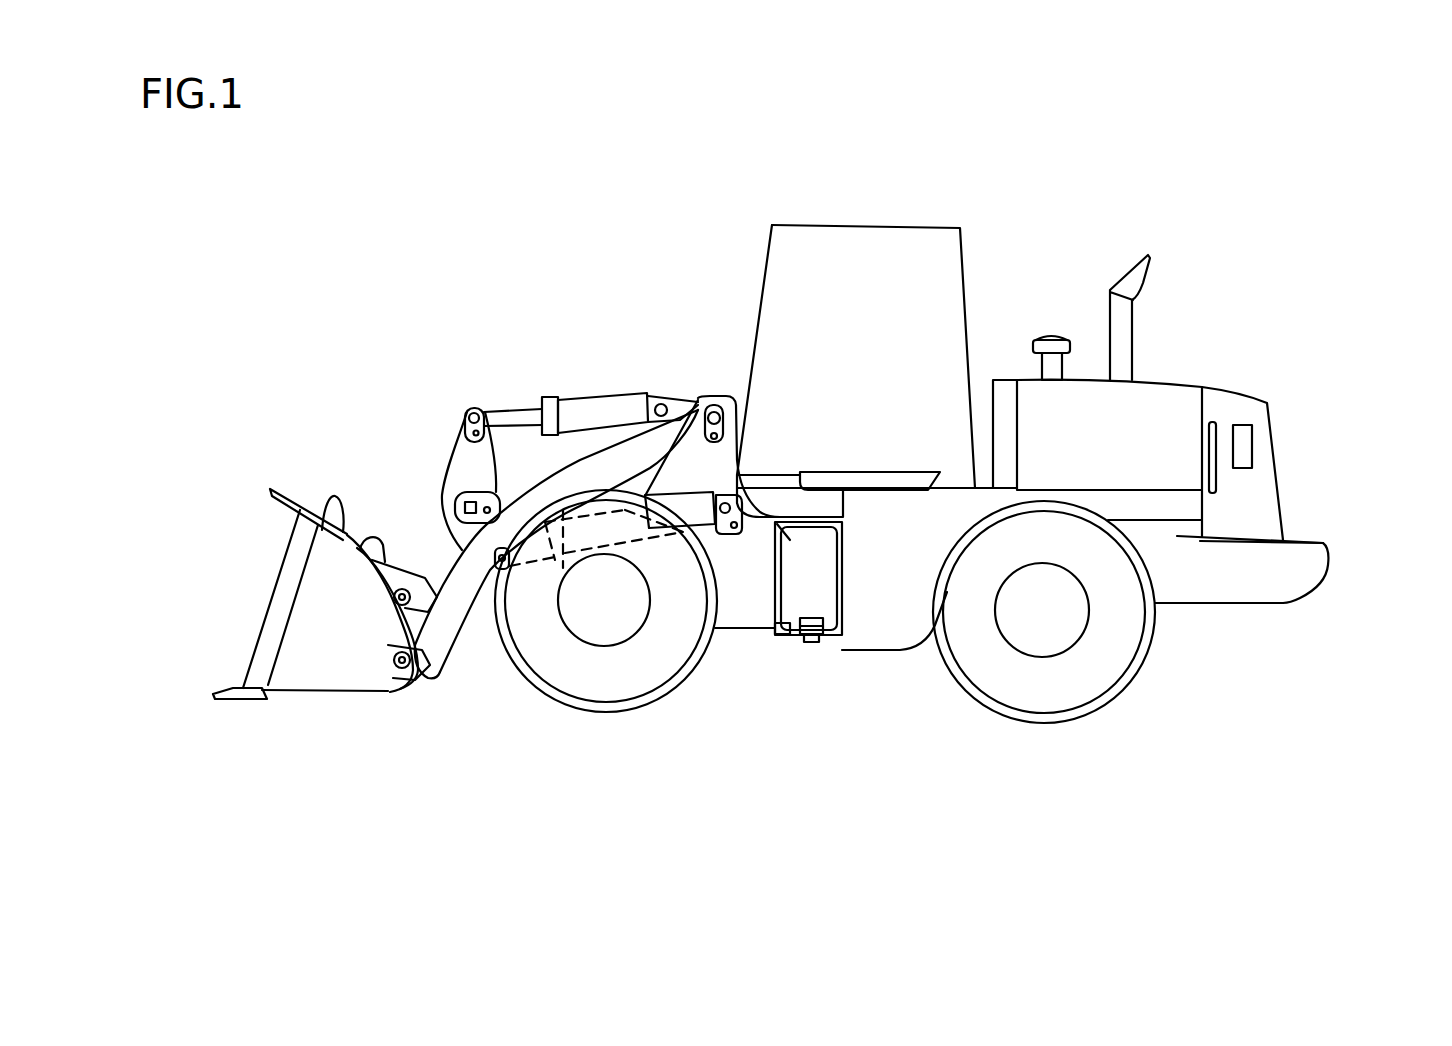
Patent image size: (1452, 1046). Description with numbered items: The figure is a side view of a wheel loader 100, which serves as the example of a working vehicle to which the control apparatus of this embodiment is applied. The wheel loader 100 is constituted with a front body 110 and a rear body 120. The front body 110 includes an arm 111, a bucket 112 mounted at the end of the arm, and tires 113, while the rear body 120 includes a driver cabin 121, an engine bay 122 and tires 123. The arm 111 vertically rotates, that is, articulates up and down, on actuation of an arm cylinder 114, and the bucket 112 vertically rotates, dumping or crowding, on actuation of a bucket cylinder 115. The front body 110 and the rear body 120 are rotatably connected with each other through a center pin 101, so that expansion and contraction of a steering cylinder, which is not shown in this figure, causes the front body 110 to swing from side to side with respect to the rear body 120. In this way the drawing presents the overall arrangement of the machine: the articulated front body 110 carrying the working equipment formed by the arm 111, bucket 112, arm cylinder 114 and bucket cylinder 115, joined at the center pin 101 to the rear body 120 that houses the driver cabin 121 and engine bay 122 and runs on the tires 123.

The wheel loader 100 is at (1236, 633).
The center pin 101 is at (813, 642).
The front body 110 is at (700, 432).
The arm 111 is at (447, 575).
The bucket 112 is at (313, 510).
The tires 113 is at (593, 678).
The arm cylinder 114 is at (558, 565).
The bucket cylinder 115 is at (592, 396).
The rear body 120 is at (1298, 563).
The driver cabin 121 is at (812, 243).
The engine bay 122 is at (1185, 405).
The tires 123 is at (1063, 692).